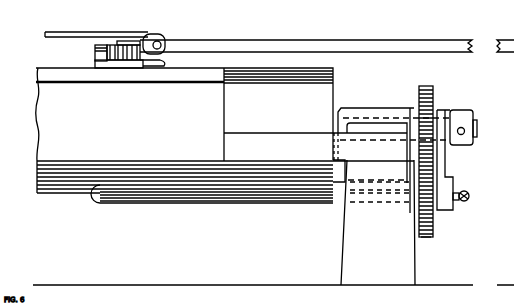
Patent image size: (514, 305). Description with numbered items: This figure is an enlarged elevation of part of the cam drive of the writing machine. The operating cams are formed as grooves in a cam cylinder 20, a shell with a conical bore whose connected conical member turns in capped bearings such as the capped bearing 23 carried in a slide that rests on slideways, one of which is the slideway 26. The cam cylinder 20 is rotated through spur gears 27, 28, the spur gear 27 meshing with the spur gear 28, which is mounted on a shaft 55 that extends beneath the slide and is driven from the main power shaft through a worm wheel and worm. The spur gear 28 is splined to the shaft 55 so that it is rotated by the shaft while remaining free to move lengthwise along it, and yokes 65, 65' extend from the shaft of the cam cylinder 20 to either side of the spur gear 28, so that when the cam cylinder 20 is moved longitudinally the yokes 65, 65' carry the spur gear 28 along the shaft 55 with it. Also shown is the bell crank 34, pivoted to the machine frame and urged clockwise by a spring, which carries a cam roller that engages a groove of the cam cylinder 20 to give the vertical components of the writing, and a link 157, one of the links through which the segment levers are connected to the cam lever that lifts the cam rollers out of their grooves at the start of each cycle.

The link 157 is at (79, 34).
The bell crank 34 is at (144, 64).
The cam cylinder 20 is at (77, 190).
The slideway 26 is at (270, 143).
The shaft 55 is at (240, 195).
The capped bearing 23 is at (367, 132).
The yoke 65' is at (379, 222).
The spur gear 27 is at (433, 92).
The spur gear 28 is at (424, 232).
The yoke 65 is at (469, 160).